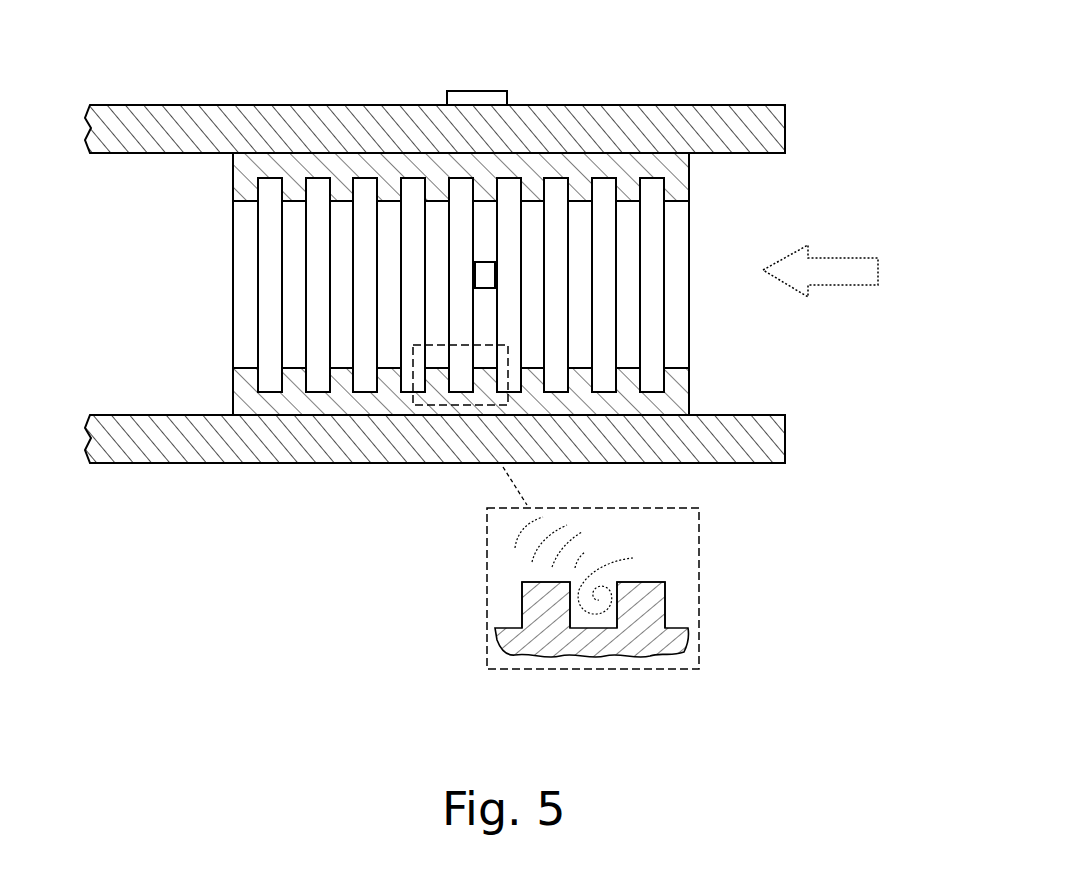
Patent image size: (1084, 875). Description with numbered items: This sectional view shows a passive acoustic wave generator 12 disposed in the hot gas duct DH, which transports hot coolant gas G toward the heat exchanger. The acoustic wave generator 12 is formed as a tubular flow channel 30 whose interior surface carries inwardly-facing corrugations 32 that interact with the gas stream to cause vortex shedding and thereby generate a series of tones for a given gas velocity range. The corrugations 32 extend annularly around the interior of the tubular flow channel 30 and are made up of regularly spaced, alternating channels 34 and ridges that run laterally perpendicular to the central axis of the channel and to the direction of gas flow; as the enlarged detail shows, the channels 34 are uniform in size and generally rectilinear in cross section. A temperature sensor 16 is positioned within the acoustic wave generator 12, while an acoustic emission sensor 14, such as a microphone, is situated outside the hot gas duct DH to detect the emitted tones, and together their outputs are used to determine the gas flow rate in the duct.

The passive acoustic wave generator 12 is at (232, 243).
The acoustic emission sensor 14 is at (479, 92).
The temperature sensor 16 is at (495, 277).
The tubular flow channel 30 is at (690, 299).
The corrugations 32 is at (677, 390).
The channels 34 is at (508, 625).
The hot gas duct DH is at (732, 105).
The hot coolant gas G is at (836, 262).